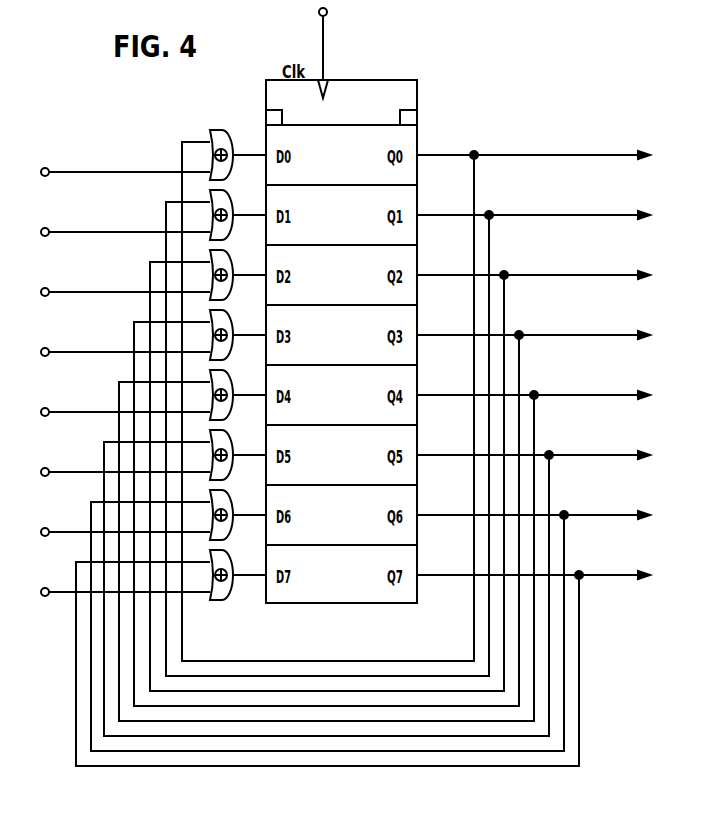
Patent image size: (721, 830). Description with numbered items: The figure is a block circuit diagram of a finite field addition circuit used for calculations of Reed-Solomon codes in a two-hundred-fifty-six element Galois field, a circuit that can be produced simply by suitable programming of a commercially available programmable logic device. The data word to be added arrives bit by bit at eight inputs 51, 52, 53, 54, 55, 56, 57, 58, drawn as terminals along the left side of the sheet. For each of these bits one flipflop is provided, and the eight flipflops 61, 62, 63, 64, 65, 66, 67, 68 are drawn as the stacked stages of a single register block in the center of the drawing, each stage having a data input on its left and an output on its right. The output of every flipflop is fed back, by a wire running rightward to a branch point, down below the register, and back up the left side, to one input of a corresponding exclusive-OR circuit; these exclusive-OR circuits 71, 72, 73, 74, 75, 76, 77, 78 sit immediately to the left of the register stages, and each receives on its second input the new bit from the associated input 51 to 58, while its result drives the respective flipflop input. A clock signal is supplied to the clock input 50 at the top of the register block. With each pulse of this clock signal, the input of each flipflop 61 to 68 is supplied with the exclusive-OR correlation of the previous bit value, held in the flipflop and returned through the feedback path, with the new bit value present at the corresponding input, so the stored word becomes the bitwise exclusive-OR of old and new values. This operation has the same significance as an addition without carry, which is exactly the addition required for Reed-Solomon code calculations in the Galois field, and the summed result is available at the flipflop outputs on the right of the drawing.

The clock input 50 is at (327, 12).
The input 51 is at (56, 164).
The input 52 is at (56, 224).
The input 53 is at (56, 284).
The input 54 is at (56, 344).
The input 55 is at (56, 404).
The input 56 is at (56, 464).
The input 57 is at (56, 524).
The input 58 is at (56, 584).
The flipflop 61 is at (418, 147).
The flipflop 62 is at (418, 207).
The flipflop 63 is at (418, 267).
The flipflop 64 is at (418, 327).
The flipflop 65 is at (418, 387).
The flipflop 66 is at (418, 447).
The flipflop 67 is at (418, 507).
The flipflop 68 is at (418, 567).
The exclusive-OR circuit 71 is at (232, 149).
The exclusive-OR circuit 72 is at (232, 209).
The exclusive-OR circuit 73 is at (232, 269).
The exclusive-OR circuit 74 is at (232, 329).
The exclusive-OR circuit 75 is at (232, 389).
The exclusive-OR circuit 76 is at (232, 449).
The exclusive-OR circuit 77 is at (232, 509).
The exclusive-OR circuit 78 is at (232, 569).